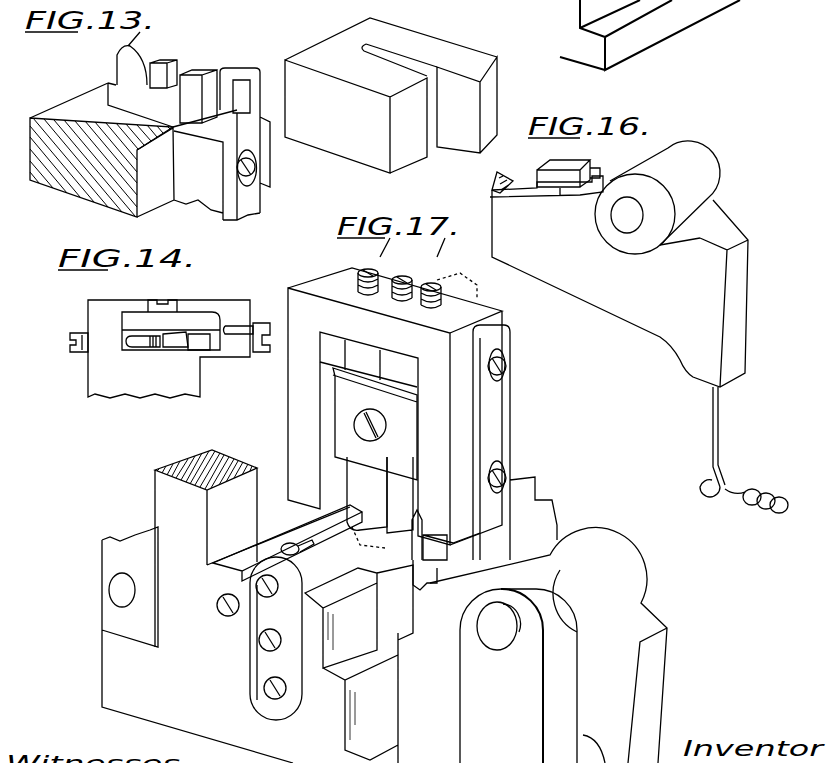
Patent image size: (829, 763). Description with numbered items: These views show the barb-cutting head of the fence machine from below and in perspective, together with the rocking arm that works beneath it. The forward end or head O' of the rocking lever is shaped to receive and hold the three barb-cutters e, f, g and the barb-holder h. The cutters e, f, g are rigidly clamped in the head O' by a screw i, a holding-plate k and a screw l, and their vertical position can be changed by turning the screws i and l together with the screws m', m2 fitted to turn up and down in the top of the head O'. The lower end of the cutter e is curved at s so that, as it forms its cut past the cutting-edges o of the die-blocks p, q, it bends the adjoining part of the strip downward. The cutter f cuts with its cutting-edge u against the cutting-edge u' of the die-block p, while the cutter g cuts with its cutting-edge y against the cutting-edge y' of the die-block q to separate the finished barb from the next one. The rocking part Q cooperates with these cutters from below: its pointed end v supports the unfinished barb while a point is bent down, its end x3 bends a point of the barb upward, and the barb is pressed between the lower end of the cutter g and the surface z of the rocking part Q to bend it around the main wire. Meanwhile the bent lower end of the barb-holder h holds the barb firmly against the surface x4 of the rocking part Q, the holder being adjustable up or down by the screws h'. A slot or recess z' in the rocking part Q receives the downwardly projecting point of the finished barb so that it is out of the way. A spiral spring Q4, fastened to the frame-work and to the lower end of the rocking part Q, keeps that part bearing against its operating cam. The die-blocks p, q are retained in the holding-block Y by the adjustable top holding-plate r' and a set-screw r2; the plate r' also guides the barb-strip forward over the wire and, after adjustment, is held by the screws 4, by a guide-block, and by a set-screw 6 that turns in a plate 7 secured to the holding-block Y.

In FIG. 13, the cutter e is at (140, 79).
In FIG. 17, the cutter e is at (367, 502).
In FIG. 13, the cutter f is at (163, 86).
In FIG. 17, the cutter f is at (404, 508).
In FIG. 13, the cutter g is at (198, 96).
In FIG. 14, the cutter g is at (203, 350).
In FIG. 17, the cutter g is at (451, 546).
In FIG. 13, the cutting-edge of cutter g y is at (197, 64).
In FIG. 13, the barb-holder h is at (247, 157).
In FIG. 14, the barb-holder h is at (244, 312).
In FIG. 17, the barb-holder h is at (509, 441).
In FIG. 13, the screws h' is at (273, 167).
In FIG. 14, the screws h' is at (266, 329).
In FIG. 17, the screws h' is at (512, 475).
In FIG. 13, the die-block p is at (389, 64).
In FIG. 17, the die-block p is at (359, 664).
In FIG. 13, the cutting-edges of die-blocks o is at (385, 51).
In FIG. 13, the die-block q is at (465, 95).
In FIG. 13, the cutting-edge of die-block p u' is at (407, 94).
In FIG. 13, the cutting-edge of die-block q y' is at (451, 83).
In FIG. 14, the holding-plate k is at (172, 330).
In FIG. 17, the holding-plate k is at (375, 424).
In FIG. 14, the screw i is at (175, 306).
In FIG. 14, the head of rocking lever O' is at (103, 317).
In FIG. 14, the curved portion of cutter e s is at (150, 349).
In FIG. 14, the cutting-edge of cutter f u is at (175, 350).
In FIG. 14, the screw l is at (70, 343).
In FIG. 16, the rocking part Q is at (620, 264).
In FIG. 17, the rocking part Q is at (548, 645).
In FIG. 16, the surface of rocking part Q x4 is at (570, 196).
In FIG. 16, the end of rocking part Q x3 is at (592, 167).
In FIG. 16, the surface of rocking part Q z is at (556, 170).
In FIG. 16, the slot or recess z' is at (523, 205).
In FIG. 17, the slot or recess z' is at (430, 583).
In FIG. 16, the pointed end of rocking part Q v is at (500, 180).
In FIG. 16, the spiral spring Q4 is at (746, 450).
In FIG. 17, the screw m' is at (382, 274).
In FIG. 17, the screw m2 is at (434, 285).
In FIG. 17, the holding-block Y is at (232, 606).
In FIG. 17, the set-screw 6 is at (276, 638).
In FIG. 17, the plate 7 is at (281, 676).
In FIG. 17, the set-screw r2 is at (221, 597).
In FIG. 17, the adjustable top holding-plate r' is at (308, 537).
In FIG. 17, the screws 4 is at (300, 551).